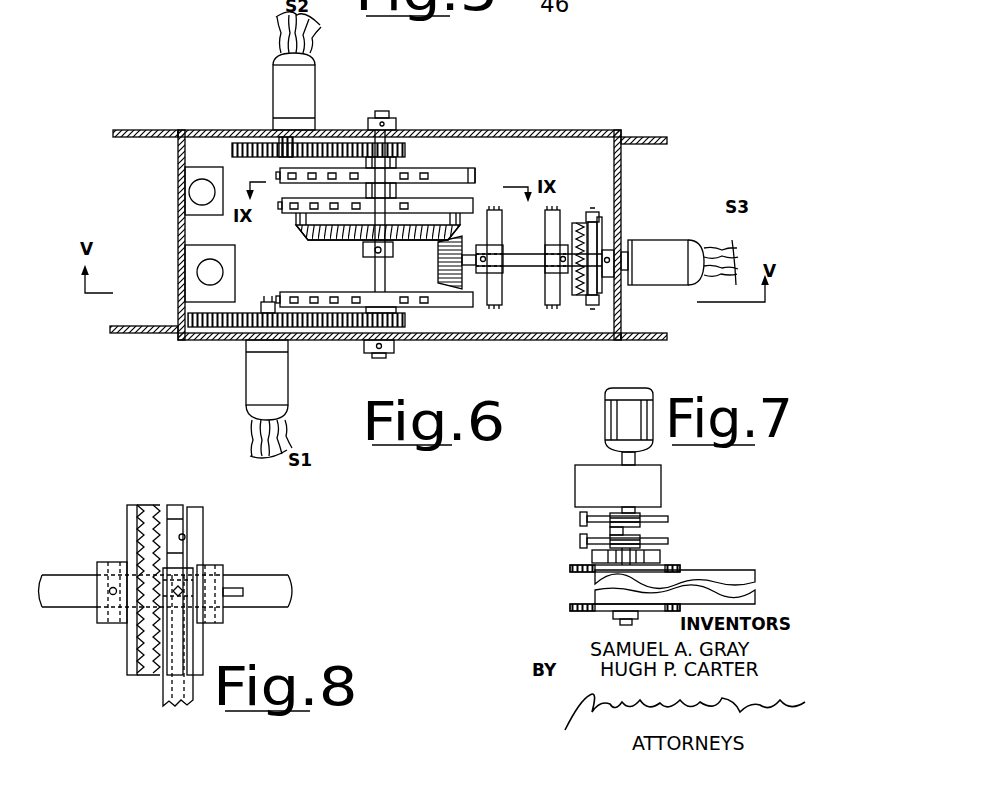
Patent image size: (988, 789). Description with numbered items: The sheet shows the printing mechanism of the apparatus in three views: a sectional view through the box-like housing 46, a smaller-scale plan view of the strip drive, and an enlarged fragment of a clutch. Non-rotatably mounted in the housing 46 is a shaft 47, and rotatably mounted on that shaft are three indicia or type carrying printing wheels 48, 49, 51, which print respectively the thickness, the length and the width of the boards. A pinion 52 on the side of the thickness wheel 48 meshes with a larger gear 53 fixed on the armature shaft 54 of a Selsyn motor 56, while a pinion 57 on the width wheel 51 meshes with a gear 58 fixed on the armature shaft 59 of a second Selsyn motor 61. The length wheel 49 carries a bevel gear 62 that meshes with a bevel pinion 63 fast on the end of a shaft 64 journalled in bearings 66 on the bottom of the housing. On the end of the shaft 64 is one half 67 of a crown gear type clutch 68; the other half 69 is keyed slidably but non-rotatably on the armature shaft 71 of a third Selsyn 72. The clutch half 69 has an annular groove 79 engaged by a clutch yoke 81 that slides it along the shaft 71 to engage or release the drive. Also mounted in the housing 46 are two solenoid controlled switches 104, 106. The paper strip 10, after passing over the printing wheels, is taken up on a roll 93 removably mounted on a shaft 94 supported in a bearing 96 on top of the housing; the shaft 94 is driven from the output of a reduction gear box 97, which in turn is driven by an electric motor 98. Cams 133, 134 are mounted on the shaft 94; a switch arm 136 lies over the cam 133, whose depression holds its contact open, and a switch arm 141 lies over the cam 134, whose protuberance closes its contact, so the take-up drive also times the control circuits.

In FIG. 7, the paper strip 10 is at (710, 570).
In FIG. 6, the housing 46 is at (594, 133).
In FIG. 6, the shaft 47 is at (388, 128).
In FIG. 6, the printing wheel 48 is at (445, 307).
In FIG. 6, the printing wheel 49 is at (474, 210).
In FIG. 6, the printing wheel 51 is at (475, 170).
In FIG. 6, the pinion 52 is at (405, 332).
In FIG. 6, the gear 53 is at (330, 330).
In FIG. 6, the armature shaft 54 is at (266, 300).
In FIG. 6, the Selsyn motor 56 is at (256, 375).
In FIG. 6, the pinion 57 is at (403, 166).
In FIG. 6, the gear 58 is at (331, 143).
In FIG. 6, the armature shaft 59 is at (282, 150).
In FIG. 6, the Selsyn motor 61 is at (272, 82).
In FIG. 6, the bevel gear 62 is at (317, 243).
In FIG. 6, the bevel pinion 63 is at (437, 268).
In FIG. 6, the shaft 64 is at (520, 257).
In FIG. 8, the shaft 64 is at (84, 594).
In FIG. 6, the bearings 66 is at (551, 262).
In FIG. 8, the clutch half 67 is at (128, 518).
In FIG. 8, the crown gear type clutch 68 is at (153, 495).
In FIG. 8, the clutch half 69 is at (167, 508).
In FIG. 6, the armature shaft 71 is at (618, 291).
In FIG. 8, the armature shaft 71 is at (257, 584).
In FIG. 6, the Selsyn 72 is at (667, 240).
In FIG. 8, the annular groove 79 is at (185, 537).
In FIG. 6, the clutch yoke 81 is at (597, 215).
In FIG. 8, the clutch yoke 81 is at (172, 686).
In FIG. 7, the take-up roll 93 is at (572, 567).
In FIG. 7, the shaft 94 is at (616, 624).
In FIG. 7, the bearing 96 is at (661, 559).
In FIG. 7, the reduction gear box 97 is at (662, 492).
In FIG. 7, the electric motor 98 is at (606, 424).
In FIG. 6, the solenoid controlled switch 104 is at (186, 264).
In FIG. 6, the solenoid controlled switch 106 is at (188, 177).
In FIG. 7, the cam 133 is at (633, 513).
In FIG. 7, the cam 134 is at (640, 534).
In FIG. 7, the switch arm 136 is at (587, 522).
In FIG. 7, the switch arm 141 is at (587, 544).